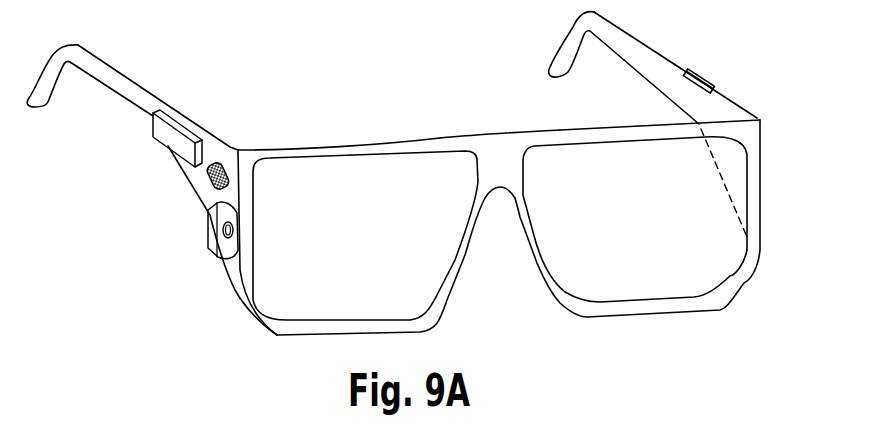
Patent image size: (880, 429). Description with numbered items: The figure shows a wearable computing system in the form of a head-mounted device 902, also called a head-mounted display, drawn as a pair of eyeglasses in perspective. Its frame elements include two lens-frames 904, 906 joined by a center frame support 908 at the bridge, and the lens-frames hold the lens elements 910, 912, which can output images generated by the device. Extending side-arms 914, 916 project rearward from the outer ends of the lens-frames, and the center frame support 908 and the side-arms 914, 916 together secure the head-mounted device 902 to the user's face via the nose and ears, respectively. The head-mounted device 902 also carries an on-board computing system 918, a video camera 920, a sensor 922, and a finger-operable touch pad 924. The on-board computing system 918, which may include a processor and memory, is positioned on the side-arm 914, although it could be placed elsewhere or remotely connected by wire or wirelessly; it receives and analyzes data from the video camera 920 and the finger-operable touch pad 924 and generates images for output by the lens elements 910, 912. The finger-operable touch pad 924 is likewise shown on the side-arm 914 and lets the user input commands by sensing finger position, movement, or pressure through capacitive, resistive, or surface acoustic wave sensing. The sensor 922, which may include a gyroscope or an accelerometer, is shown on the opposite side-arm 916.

The head-mounted device 902 is at (348, 52).
The lens-frame 904 is at (335, 150).
The lens-frame 906 is at (582, 133).
The center frame support 908 is at (500, 157).
The lens element 910 is at (308, 299).
The lens element 912 is at (655, 284).
The extending side-arm 914 is at (173, 113).
The extending side-arm 916 is at (660, 58).
The on-board computing system 918 is at (170, 134).
The video camera 920 is at (213, 221).
The sensor 922 is at (701, 74).
The finger-operable touch pad 924 is at (208, 177).